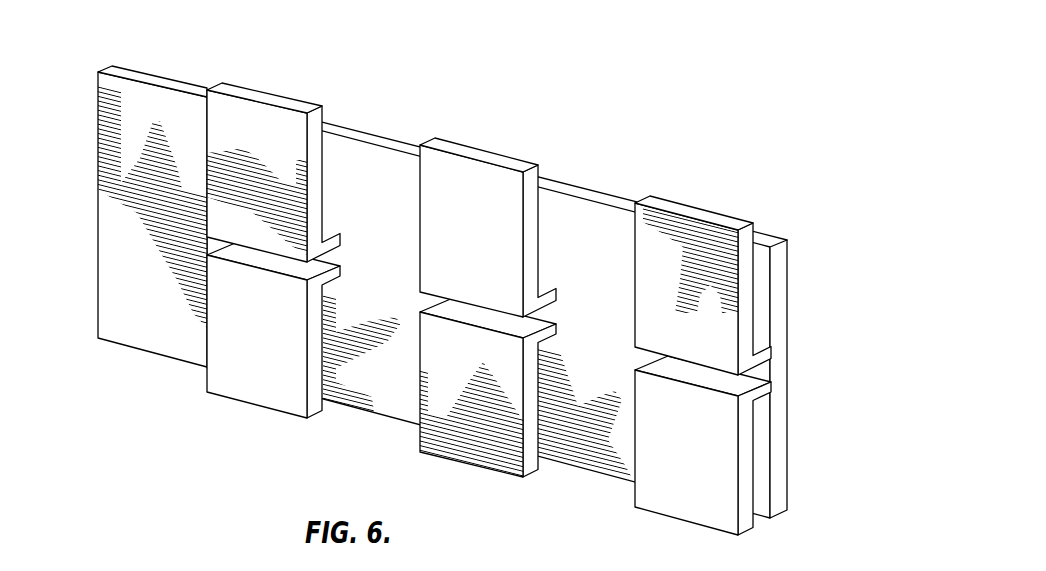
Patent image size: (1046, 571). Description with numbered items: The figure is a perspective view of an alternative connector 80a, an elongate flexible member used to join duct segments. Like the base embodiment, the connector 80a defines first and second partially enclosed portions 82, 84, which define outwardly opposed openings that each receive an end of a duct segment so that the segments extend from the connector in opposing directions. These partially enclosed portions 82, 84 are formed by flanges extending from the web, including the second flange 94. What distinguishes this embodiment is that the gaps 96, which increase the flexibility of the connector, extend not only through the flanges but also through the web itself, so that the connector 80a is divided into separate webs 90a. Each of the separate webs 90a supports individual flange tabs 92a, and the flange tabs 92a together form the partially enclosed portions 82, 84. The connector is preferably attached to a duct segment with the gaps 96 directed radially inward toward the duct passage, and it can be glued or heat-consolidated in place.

The alternative connector 80a is at (575, 142).
The first partially enclosed portion 82 is at (313, 119).
The second partially enclosed portion 84 is at (317, 409).
The separate webs 90a is at (341, 272).
The flange tabs 92a is at (452, 281).
The second flange 94 is at (123, 72).
The gaps 96 is at (403, 168).